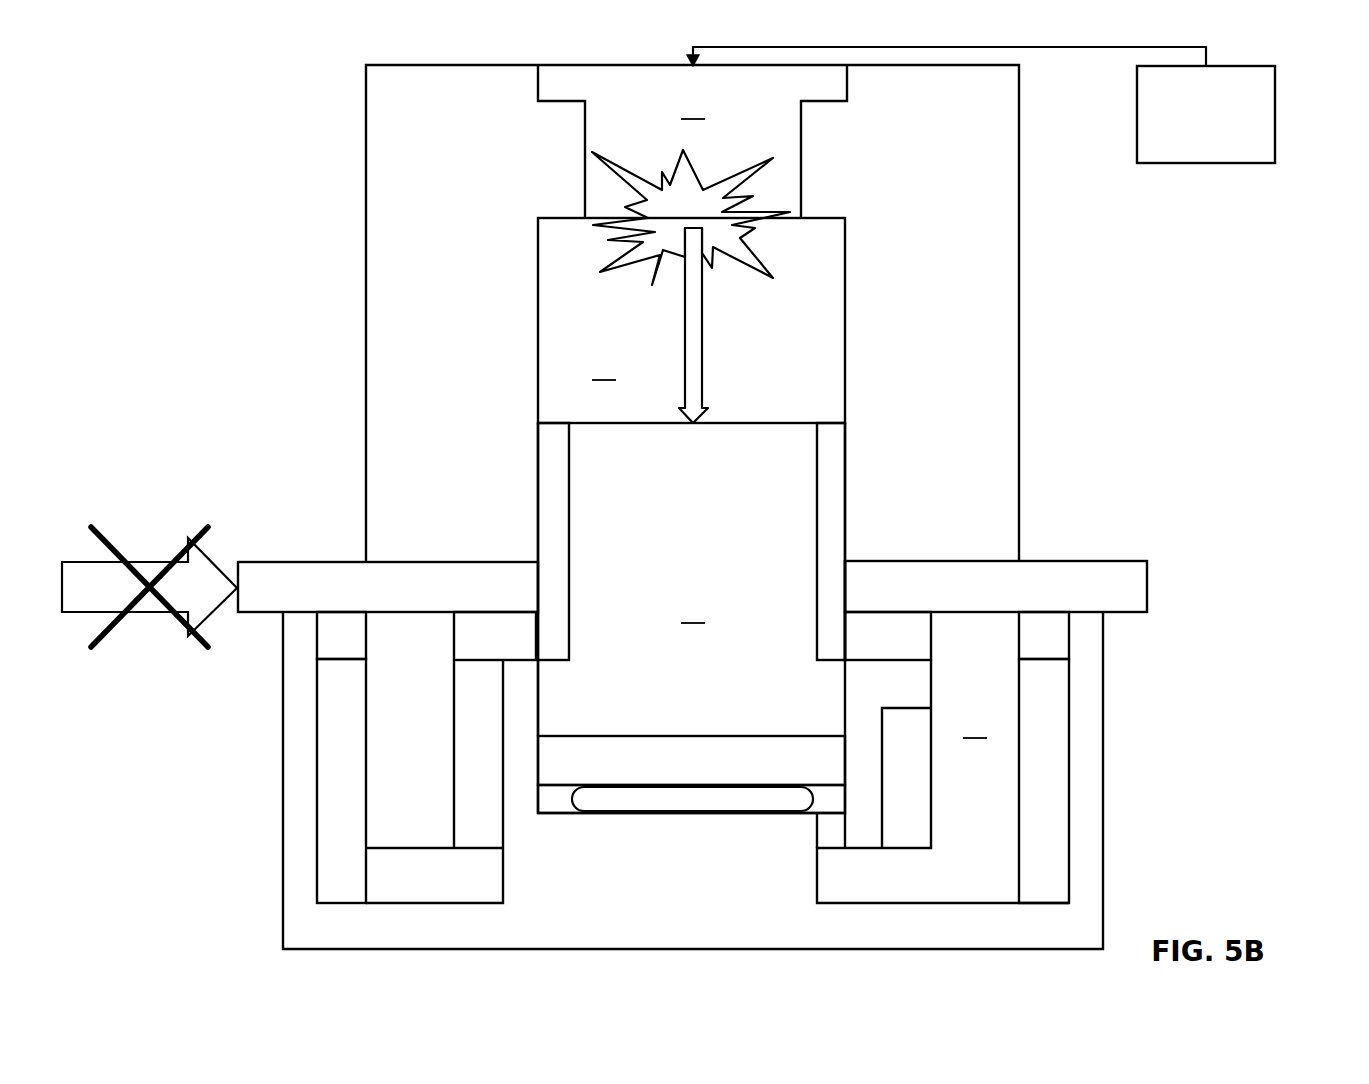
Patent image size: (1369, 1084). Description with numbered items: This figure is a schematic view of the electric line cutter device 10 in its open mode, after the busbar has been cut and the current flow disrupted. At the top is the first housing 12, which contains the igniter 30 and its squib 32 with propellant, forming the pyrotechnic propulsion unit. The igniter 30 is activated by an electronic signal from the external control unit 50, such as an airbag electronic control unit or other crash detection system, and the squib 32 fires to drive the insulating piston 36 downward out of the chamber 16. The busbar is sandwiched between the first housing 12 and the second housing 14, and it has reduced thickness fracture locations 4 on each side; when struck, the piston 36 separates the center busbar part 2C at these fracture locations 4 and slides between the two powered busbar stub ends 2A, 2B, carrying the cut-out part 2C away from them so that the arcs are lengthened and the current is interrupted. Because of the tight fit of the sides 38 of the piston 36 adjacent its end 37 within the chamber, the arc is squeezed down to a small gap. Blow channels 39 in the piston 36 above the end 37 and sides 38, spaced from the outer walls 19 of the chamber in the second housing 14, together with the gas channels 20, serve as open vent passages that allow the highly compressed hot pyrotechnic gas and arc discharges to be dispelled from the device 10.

The electric line cutter device 10 is at (286, 76).
The first housing 12 is at (1005, 207).
The igniter 30 is at (692, 141).
The squib 32 is at (790, 187).
The chamber 16 is at (691, 320).
The piston 36 is at (768, 652).
The blow channels 39 is at (548, 470).
The end of the piston 37 is at (683, 735).
The sides of the piston 38 is at (540, 680).
The fracture locations 4 is at (845, 573).
The busbar stub end 2A is at (273, 603).
The busbar stub end 2B is at (1113, 603).
The cut-out busbar part 2C is at (551, 773).
The second housing 14 is at (693, 780).
The outer walls of the chamber 19 is at (845, 717).
The gas channels 20 is at (519, 660).
The external control unit 50 is at (1275, 113).